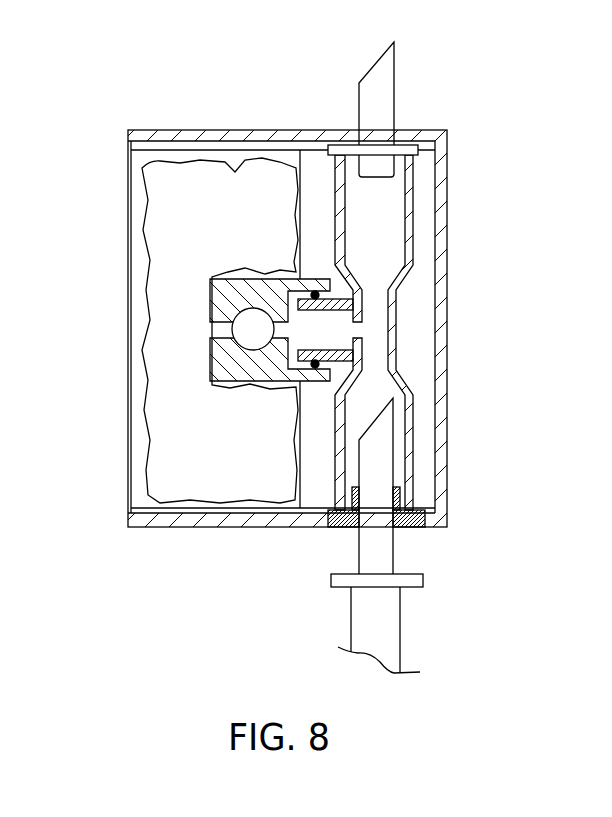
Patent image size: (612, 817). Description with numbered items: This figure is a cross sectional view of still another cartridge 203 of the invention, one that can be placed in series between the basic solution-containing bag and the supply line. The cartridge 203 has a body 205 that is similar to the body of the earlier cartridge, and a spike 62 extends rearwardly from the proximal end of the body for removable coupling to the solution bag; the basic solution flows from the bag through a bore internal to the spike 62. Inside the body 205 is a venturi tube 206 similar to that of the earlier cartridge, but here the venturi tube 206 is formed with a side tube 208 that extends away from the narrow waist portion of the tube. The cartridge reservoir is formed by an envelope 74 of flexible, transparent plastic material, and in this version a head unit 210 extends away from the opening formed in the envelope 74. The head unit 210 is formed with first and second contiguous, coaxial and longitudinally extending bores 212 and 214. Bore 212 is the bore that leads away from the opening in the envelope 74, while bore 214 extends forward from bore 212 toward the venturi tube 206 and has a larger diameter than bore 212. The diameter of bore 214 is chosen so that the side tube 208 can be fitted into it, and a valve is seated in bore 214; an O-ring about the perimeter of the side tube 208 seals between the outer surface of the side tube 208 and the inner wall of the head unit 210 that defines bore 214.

The cartridge 203 is at (215, 108).
The spike 62 is at (394, 117).
The envelope 74 is at (201, 205).
The venturi tube 206 is at (397, 227).
The head unit 210 is at (210, 298).
The first bore 212 is at (262, 329).
The second bore 214 is at (344, 337).
The side tube 208 is at (333, 357).
The cartridge body 205 is at (217, 528).